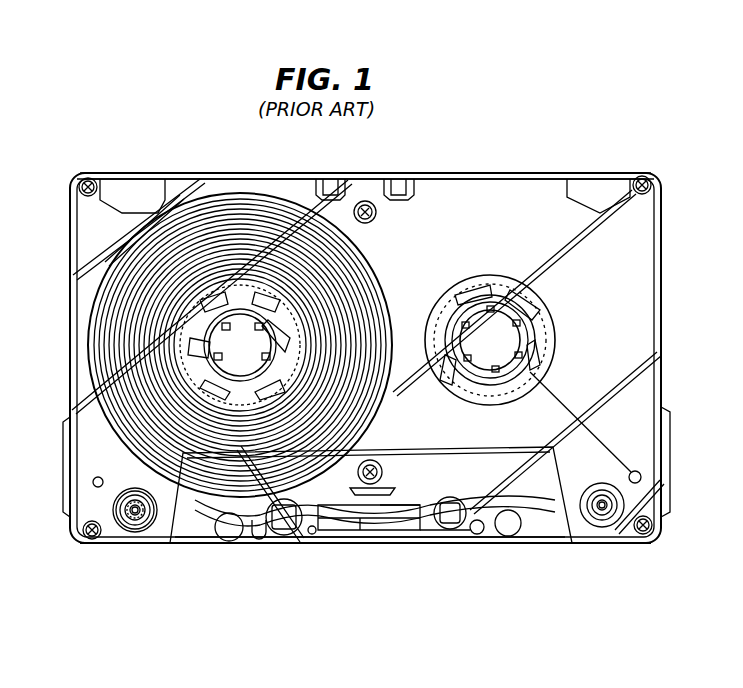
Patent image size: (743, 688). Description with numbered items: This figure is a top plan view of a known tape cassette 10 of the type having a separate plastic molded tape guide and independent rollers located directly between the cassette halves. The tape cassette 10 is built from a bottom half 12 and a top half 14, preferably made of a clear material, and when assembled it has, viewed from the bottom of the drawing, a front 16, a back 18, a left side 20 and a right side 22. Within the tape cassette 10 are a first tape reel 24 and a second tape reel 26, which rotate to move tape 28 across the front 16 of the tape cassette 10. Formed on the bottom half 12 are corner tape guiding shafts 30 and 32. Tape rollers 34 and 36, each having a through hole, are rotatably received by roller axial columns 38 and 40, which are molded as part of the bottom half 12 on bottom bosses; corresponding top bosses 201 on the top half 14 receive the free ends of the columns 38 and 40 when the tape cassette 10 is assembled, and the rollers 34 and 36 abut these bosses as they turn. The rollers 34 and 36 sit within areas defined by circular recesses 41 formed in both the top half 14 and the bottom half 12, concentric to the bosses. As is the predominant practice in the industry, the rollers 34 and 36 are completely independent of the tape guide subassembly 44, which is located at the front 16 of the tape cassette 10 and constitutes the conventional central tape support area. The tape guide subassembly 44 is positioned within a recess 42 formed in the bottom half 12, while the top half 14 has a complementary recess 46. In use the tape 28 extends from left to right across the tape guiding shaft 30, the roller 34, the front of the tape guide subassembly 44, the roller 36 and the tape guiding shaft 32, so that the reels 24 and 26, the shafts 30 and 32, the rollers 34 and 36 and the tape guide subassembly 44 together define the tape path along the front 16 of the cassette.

The tape cassette 10 is at (510, 139).
The bottom half 12 is at (627, 297).
The top half 14 is at (628, 260).
The front 16 is at (466, 542).
The back 18 is at (297, 177).
The left side 20 is at (70, 338).
The right side 22 is at (668, 394).
The first tape reel 24 is at (240, 316).
The second tape reel 26 is at (505, 320).
The tape 28 is at (604, 442).
The tape guiding shaft 30 is at (100, 477).
The tape guiding shaft 32 is at (629, 474).
The tape roller 34 is at (141, 522).
The tape roller 36 is at (606, 516).
The roller axial column 38 is at (127, 520).
The roller axial column 40 is at (597, 515).
The circular recess 41 is at (130, 500).
The recess 42 is at (536, 520).
The tape guide subassembly 44 is at (430, 484).
The complementary recess 46 is at (420, 462).
The top boss 201 is at (134, 520).